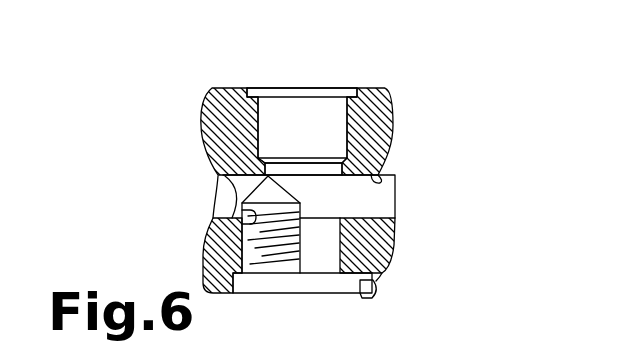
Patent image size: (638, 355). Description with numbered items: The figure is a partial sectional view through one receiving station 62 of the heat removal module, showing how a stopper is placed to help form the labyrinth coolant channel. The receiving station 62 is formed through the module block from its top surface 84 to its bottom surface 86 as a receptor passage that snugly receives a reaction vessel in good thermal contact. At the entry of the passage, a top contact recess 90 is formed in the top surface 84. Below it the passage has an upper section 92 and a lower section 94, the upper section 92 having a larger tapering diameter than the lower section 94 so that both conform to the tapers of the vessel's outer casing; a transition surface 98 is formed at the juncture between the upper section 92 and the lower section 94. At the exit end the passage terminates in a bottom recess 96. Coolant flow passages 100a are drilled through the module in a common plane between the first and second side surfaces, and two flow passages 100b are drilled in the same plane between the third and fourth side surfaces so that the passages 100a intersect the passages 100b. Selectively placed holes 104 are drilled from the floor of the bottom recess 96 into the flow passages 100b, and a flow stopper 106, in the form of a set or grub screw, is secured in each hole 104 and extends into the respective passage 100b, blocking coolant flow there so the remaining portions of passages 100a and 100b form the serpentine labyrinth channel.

The receiving station 62 is at (343, 75).
The top surface 84 is at (363, 86).
The bottom surface 86 is at (379, 279).
The top contact recess 90 is at (253, 95).
The upper section 92 is at (345, 128).
The lower section 94 is at (341, 241).
The bottom recess 96 is at (364, 281).
The transition surface 98 is at (270, 160).
The flow passages 100a is at (210, 192).
The flow passages 100b is at (377, 181).
The holes 104 is at (243, 214).
The flow stopper 106 is at (250, 258).